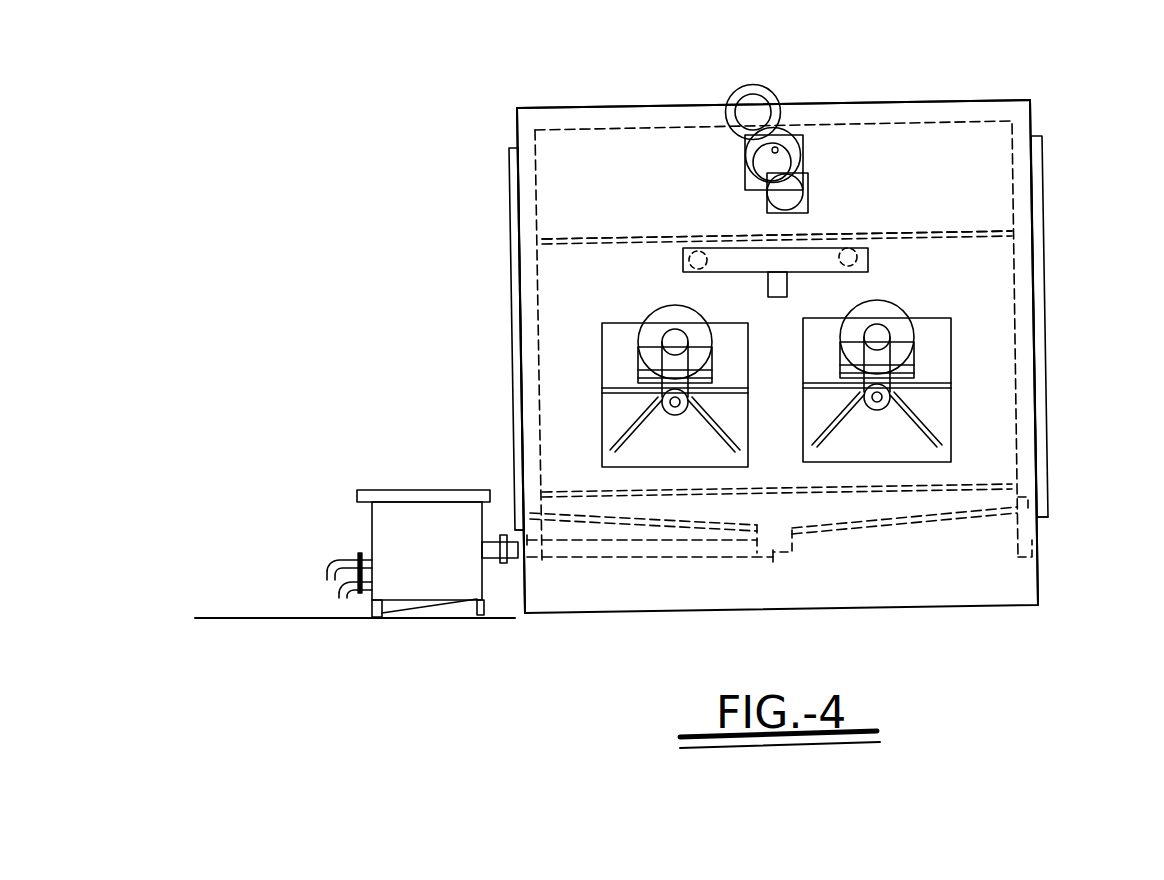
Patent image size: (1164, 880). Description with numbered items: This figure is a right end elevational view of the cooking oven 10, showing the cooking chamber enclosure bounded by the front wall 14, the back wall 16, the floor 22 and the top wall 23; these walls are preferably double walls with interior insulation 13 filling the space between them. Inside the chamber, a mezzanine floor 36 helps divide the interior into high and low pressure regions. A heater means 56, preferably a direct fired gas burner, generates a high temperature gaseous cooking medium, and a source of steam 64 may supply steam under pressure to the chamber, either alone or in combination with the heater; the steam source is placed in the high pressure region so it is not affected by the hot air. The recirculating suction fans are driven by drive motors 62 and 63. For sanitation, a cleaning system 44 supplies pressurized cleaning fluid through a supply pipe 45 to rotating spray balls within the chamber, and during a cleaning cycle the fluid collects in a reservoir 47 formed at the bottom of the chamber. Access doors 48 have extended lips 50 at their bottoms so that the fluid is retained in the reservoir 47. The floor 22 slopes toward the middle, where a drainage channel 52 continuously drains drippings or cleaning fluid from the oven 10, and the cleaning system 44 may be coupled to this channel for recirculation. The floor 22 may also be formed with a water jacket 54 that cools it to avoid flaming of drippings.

The cooking oven 10 is at (566, 78).
The interior insulation 13 is at (980, 110).
The front wall 14 is at (517, 135).
The back wall 16 is at (1032, 112).
The floor 22 is at (940, 515).
The top wall 23 is at (623, 108).
The mezzanine floor 36 is at (691, 235).
The cleaning system 44 is at (371, 480).
The supply pipe 45 is at (645, 560).
The reservoir 47 is at (837, 512).
The access doors 48 is at (508, 300).
The extended lips 50 is at (523, 530).
The drainage channel 52 is at (773, 560).
The water jacket 54 is at (982, 515).
The heater means 56 is at (790, 112).
The drive motor 62 is at (925, 330).
The drive motor 63 is at (626, 335).
The source of steam 64 is at (870, 252).